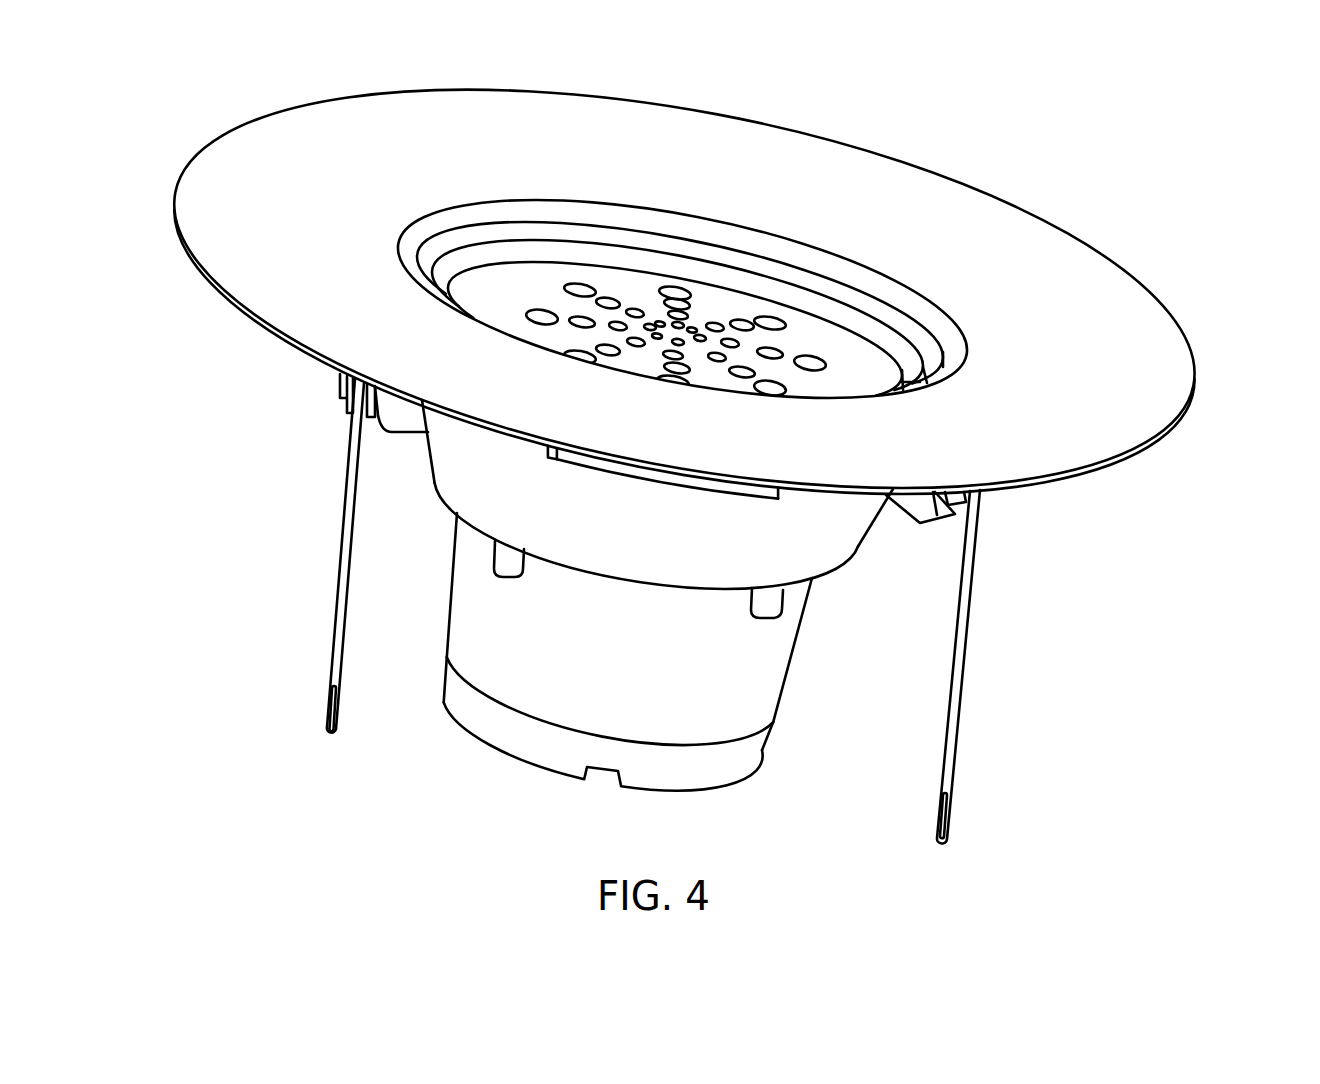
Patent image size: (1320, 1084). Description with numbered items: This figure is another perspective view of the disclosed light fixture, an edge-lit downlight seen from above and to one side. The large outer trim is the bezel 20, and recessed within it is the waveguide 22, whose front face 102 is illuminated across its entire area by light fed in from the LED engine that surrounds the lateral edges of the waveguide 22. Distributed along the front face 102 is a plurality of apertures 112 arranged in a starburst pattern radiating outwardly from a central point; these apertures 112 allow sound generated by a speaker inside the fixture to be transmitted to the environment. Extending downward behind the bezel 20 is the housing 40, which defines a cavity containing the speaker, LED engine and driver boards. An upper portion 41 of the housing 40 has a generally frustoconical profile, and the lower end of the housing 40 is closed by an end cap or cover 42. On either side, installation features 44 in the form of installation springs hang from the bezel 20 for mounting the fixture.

The bezel 20 is at (1181, 345).
The waveguide 22 is at (942, 368).
The face 102 is at (840, 327).
The apertures 112 is at (773, 318).
The portion 41 is at (858, 546).
The housing 40 is at (805, 622).
The end cap or cover 42 is at (765, 751).
The installation features 44 is at (958, 691).